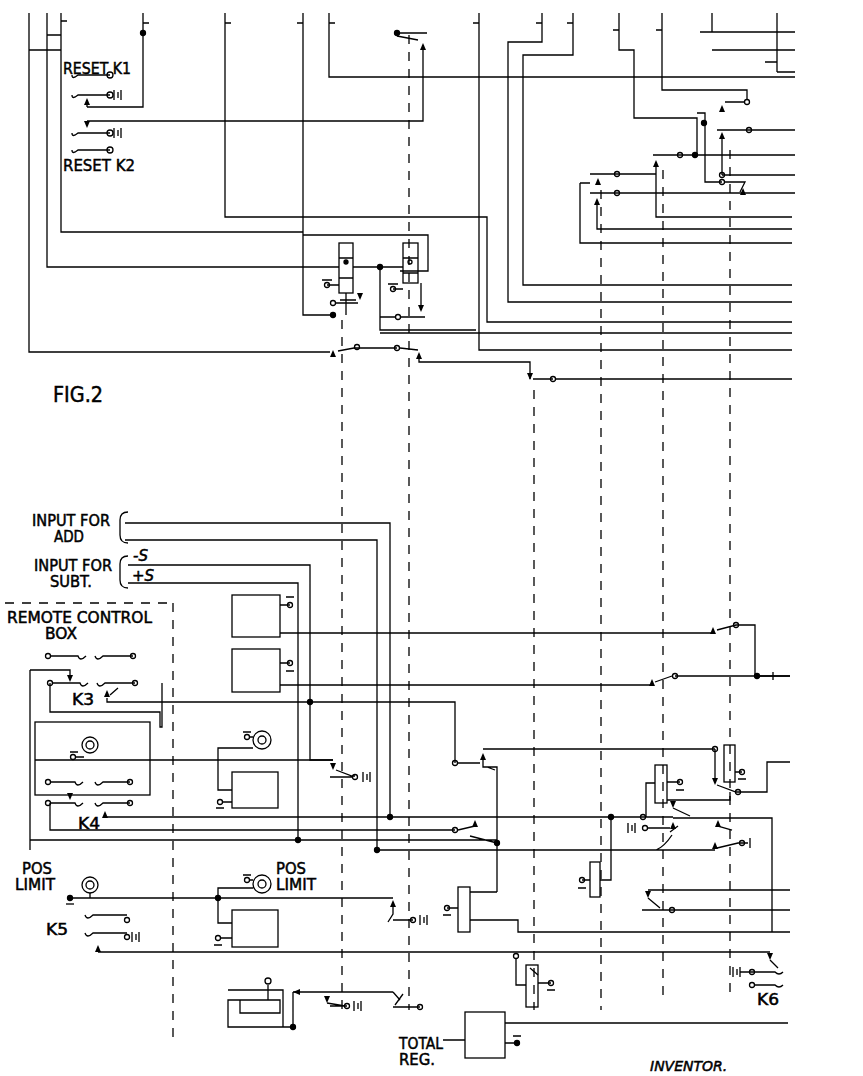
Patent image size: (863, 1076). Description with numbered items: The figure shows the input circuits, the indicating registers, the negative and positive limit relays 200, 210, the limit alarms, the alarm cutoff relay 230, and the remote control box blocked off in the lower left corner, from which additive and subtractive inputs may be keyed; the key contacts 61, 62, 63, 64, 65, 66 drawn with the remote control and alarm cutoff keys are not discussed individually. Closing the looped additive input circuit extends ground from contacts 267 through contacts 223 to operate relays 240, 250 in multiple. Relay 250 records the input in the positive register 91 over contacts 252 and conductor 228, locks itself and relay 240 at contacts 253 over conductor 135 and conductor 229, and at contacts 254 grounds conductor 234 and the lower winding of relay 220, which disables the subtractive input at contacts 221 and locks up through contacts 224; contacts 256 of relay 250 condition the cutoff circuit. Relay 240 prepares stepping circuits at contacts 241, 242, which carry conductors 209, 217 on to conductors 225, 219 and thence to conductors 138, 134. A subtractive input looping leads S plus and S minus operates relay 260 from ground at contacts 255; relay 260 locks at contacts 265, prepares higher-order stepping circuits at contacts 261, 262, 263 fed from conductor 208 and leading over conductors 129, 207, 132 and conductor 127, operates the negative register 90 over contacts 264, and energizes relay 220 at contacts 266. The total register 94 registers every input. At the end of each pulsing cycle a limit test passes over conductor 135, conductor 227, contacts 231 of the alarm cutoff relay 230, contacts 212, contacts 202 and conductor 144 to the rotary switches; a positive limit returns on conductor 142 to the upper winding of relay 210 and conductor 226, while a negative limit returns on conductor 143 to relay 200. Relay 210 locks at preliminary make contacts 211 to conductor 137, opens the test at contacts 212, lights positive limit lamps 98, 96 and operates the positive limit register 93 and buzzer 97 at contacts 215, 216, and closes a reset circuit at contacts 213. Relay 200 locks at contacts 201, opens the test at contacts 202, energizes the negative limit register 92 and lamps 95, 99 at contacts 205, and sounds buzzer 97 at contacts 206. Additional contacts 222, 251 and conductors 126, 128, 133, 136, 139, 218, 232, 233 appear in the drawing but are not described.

The remote control add switch 61 is at (68, 671).
The remote control contact 62 is at (112, 689).
The remote control subtract switch 63 is at (89, 783).
The remote control contact 64 is at (112, 813).
The K5 relay contact 65 is at (92, 949).
The K6 relay contact 66 is at (774, 960).
The negative register 90 is at (232, 617).
The positive register 91 is at (232, 669).
The negative limit register 92 is at (228, 788).
The positive limit register 93 is at (226, 924).
The total register 94 is at (505, 1053).
The negative limit lamp 95 is at (79, 743).
The positive limit alarm lamp 96 is at (98, 881).
The general limit alarm buzzer 97 is at (264, 1017).
The positive limit alarm lamp 98 is at (268, 877).
The negative limit lamp 99 is at (272, 735).
The bus line 126 is at (766, 43).
The conductor 127 is at (732, 49).
The bus line 128 is at (730, 27).
The conductor 129 is at (708, 58).
The conductor 132 is at (687, 84).
The bus line 133 is at (657, 152).
The conductor 134 is at (644, 160).
The conductor 135 is at (616, 185).
The bus line 136 is at (562, 45).
The conductor 137 is at (300, 162).
The conductor 138 is at (508, 171).
The bus line 139 is at (131, 58).
The conductor 142 is at (182, 120).
The conductor 143 is at (193, 140).
The conductor 144 is at (179, 182).
The negative limit relay 200 is at (364, 276).
The preliminary make contacts 201 is at (335, 303).
The contacts 202 is at (326, 355).
The contacts 205 is at (337, 767).
The contacts 206 is at (326, 1012).
The conductor 207 is at (756, 137).
The conductor 208 is at (752, 149).
The conductor 209 is at (758, 166).
The positive limit relay 210 is at (402, 263).
The preliminary make contacts 211 is at (418, 305).
The contacts 212 is at (465, 358).
The contacts 213 is at (410, 44).
The contacts 215 is at (386, 918).
The contacts 216 is at (415, 993).
The conductor 217 is at (692, 192).
The line 218 is at (777, 210).
The conductor 219 is at (722, 230).
The relay 220 is at (460, 889).
The contacts 221 is at (482, 753).
The relay contact 222 is at (505, 764).
The contacts 223 is at (460, 817).
The contacts 224 is at (278, 828).
The conductor 225 is at (760, 245).
The conductor 226 is at (716, 335).
The conductor 227 is at (757, 385).
The conductor 228 is at (773, 665).
The conductor 229 is at (782, 766).
The alarm cutoff relay 230 is at (542, 981).
The contacts 231 is at (523, 380).
The line 232 is at (784, 894).
The line 233 is at (784, 916).
The conductor 234 is at (784, 936).
The relay 240 is at (588, 898).
The contacts 241 is at (590, 182).
The contacts 242 is at (693, 213).
The relay 250 is at (654, 776).
The relay contact 251 is at (652, 164).
The contacts 252 is at (650, 681).
The contacts 253 is at (675, 813).
The contacts 254 is at (668, 832).
The contacts 255 is at (664, 853).
The contacts 256 is at (644, 907).
The relay 260 is at (739, 749).
The contacts 261 is at (714, 107).
The contacts 262 is at (718, 138).
The contacts 263 is at (718, 186).
The contacts 264 is at (708, 630).
The contacts 265 is at (706, 788).
The contacts 266 is at (734, 830).
The contacts 267 is at (720, 853).